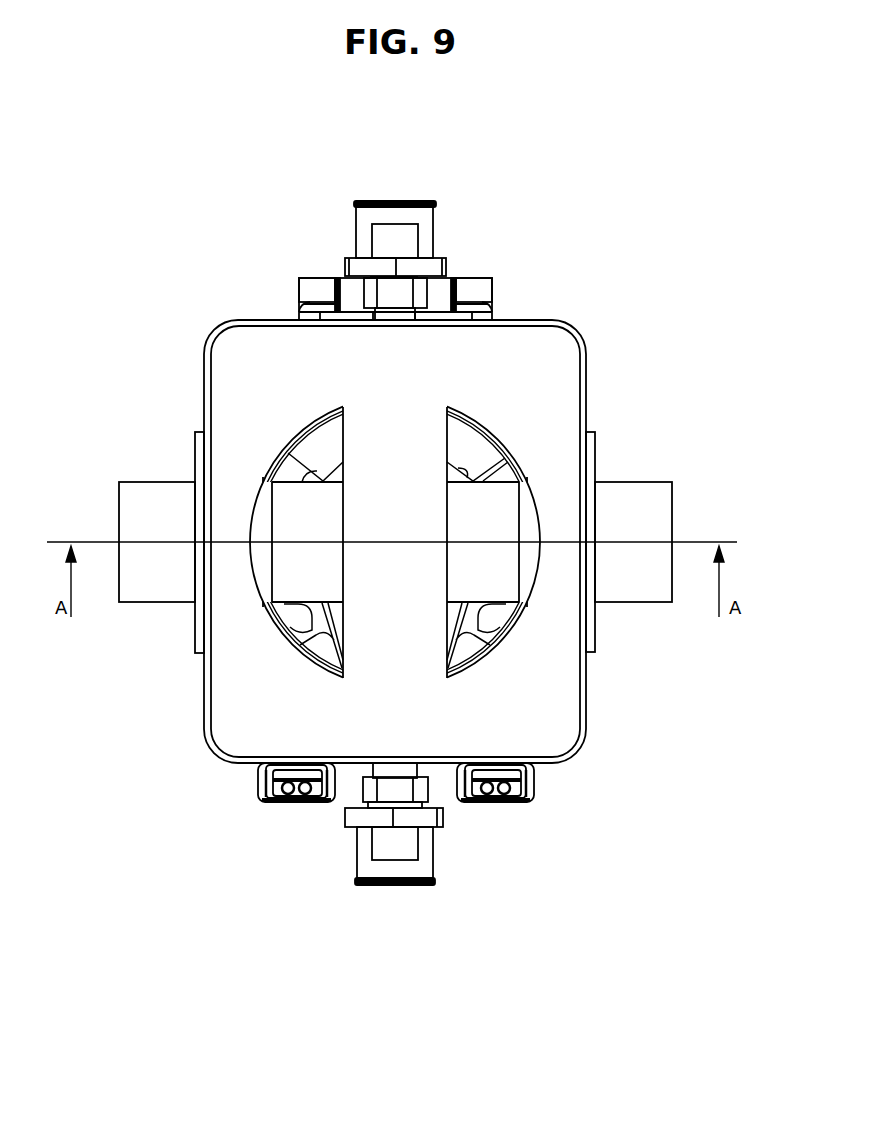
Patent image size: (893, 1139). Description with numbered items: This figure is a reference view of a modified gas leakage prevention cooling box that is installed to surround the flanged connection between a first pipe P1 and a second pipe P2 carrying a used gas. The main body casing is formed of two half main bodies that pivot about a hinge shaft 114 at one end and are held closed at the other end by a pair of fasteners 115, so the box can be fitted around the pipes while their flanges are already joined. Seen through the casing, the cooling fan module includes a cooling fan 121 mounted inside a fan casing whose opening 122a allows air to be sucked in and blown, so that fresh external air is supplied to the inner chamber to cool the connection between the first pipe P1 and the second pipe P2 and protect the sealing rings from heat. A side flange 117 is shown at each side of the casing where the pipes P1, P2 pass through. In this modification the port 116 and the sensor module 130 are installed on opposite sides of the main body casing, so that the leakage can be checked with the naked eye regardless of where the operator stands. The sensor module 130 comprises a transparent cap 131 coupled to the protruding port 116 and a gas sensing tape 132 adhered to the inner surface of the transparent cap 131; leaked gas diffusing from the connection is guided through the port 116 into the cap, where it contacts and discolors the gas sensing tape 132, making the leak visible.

The sensor module 130 is at (442, 204).
The hinge shaft 114 is at (307, 283).
The fasteners 115 is at (300, 798).
The port 116 is at (421, 842).
The side flange 117 is at (596, 630).
The cooling fan 121 is at (468, 440).
The opening 122a is at (290, 450).
The transparent cap 131 is at (421, 870).
The gas sensing tape 132 is at (391, 887).
The first pipe P1 is at (158, 490).
The second pipe P2 is at (632, 490).